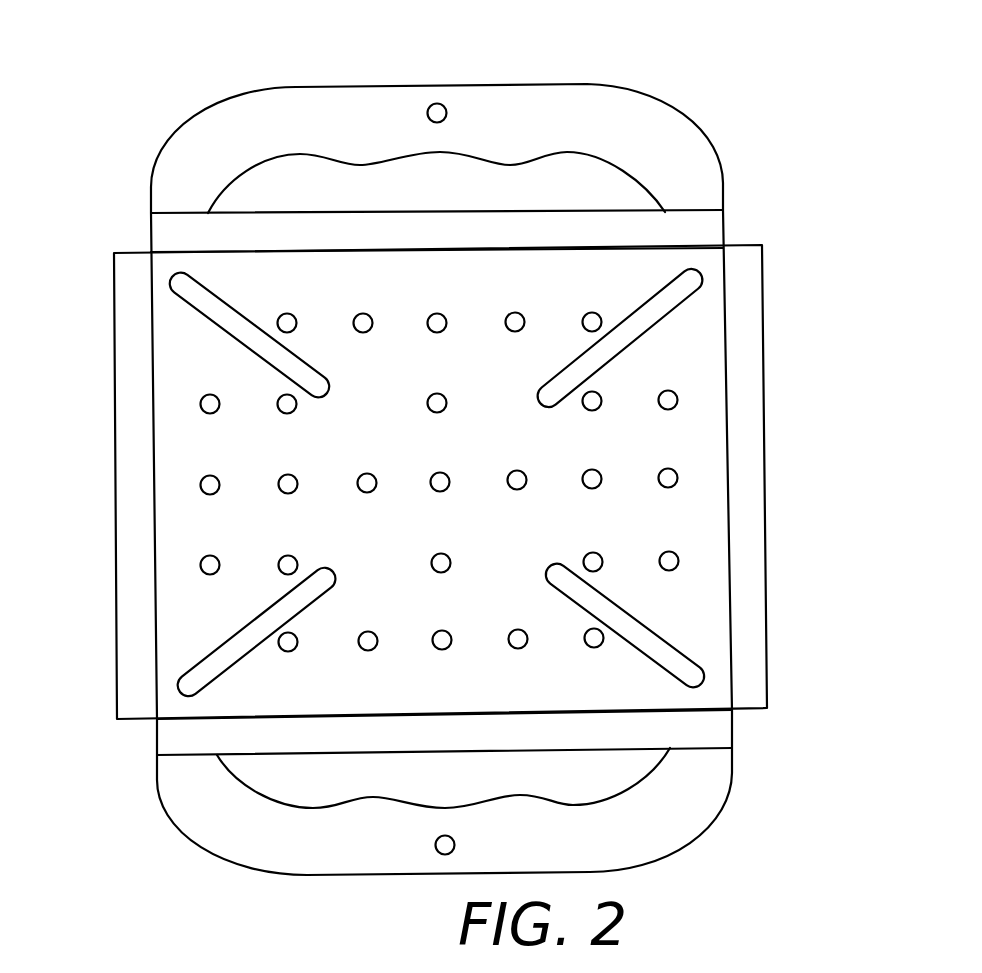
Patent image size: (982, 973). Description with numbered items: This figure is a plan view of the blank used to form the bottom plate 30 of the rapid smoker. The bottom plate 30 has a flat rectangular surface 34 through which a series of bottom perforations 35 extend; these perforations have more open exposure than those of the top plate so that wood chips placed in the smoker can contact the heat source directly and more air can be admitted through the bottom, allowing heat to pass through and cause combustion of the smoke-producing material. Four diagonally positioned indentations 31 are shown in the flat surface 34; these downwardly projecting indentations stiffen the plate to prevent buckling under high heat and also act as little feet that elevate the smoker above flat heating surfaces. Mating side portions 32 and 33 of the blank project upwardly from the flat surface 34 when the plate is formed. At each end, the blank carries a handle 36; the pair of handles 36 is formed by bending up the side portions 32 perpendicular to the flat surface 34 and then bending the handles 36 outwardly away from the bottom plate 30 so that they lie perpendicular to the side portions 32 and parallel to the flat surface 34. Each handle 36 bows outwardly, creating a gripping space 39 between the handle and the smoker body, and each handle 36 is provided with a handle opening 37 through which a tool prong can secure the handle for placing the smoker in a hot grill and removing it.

The bottom plate 30 is at (441, 459).
The downwardly projecting diagonally positioned indentations 31 is at (652, 630).
The side portions 32 is at (725, 228).
The side portions 33 is at (133, 252).
The flat surface 34 is at (442, 483).
The bottom perforations 35 is at (353, 318).
The handles 36 is at (320, 86).
The handle opening 37 is at (447, 113).
The gripping space 39 is at (567, 178).